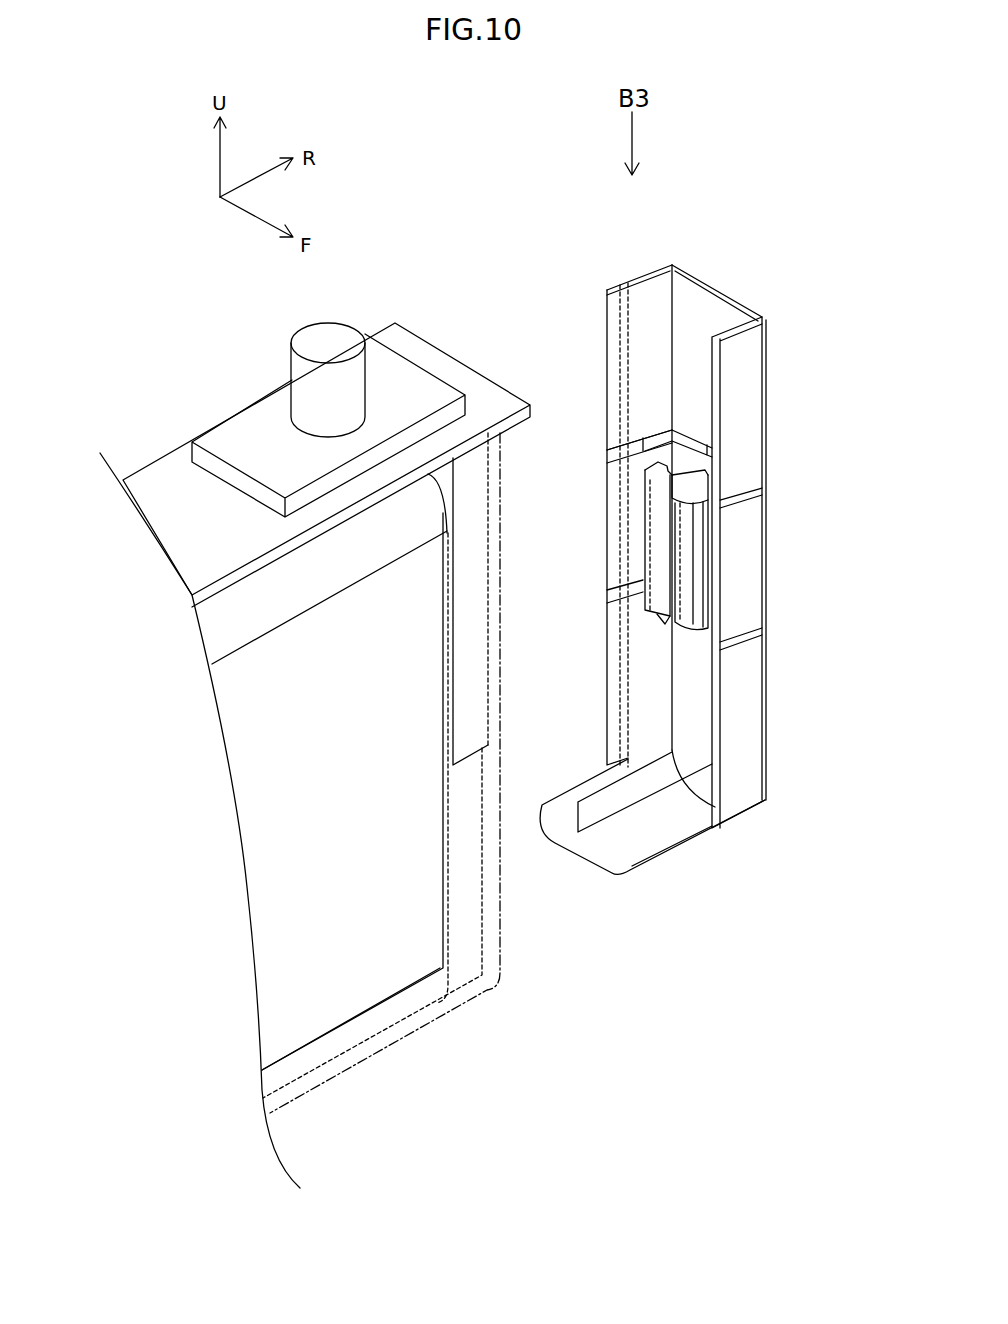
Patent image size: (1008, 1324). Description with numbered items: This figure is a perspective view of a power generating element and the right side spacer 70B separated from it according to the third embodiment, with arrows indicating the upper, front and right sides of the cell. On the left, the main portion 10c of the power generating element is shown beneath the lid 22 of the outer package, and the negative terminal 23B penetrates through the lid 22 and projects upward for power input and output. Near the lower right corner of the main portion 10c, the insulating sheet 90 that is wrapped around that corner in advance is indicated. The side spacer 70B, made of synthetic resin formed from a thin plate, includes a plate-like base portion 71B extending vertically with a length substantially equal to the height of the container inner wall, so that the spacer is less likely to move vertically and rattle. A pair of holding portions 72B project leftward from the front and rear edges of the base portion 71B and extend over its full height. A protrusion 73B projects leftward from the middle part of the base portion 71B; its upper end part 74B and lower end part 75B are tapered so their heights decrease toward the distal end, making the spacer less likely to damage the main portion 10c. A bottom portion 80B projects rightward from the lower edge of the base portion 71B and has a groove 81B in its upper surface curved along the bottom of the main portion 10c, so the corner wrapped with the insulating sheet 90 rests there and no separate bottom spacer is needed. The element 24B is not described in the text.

The lid 22 is at (153, 483).
The negative terminal 23B is at (327, 342).
The top plate 24B is at (467, 467).
The main portion 10c is at (358, 980).
The insulating sheet 90 is at (500, 873).
The right side spacer 70B is at (697, 579).
The base portion 71B is at (687, 293).
The holding portions 72B is at (743, 713).
The protrusion 73B is at (662, 545).
The upper end part 74B is at (655, 473).
The lower end part 75B is at (667, 622).
The bottom portion 80B is at (652, 832).
The groove 81B is at (600, 808).